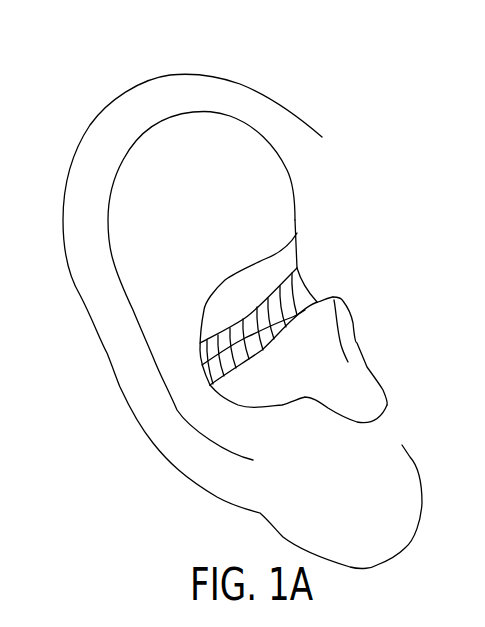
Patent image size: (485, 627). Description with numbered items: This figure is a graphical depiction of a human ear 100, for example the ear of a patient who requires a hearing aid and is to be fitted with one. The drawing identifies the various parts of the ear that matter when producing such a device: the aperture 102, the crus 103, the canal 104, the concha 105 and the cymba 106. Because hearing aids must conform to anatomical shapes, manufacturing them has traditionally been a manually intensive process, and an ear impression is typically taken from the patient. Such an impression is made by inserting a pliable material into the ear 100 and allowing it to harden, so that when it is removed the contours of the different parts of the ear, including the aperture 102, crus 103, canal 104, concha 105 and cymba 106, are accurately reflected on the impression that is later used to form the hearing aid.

The ear 100 is at (88, 68).
The aperture 102 is at (353, 333).
The crus 103 is at (300, 296).
The canal 104 is at (340, 316).
The concha 105 is at (287, 378).
The cymba 106 is at (250, 283).